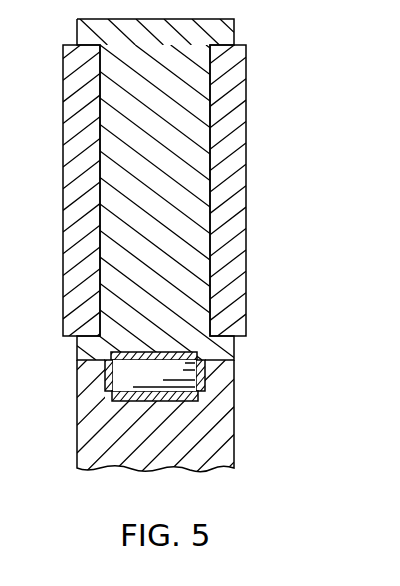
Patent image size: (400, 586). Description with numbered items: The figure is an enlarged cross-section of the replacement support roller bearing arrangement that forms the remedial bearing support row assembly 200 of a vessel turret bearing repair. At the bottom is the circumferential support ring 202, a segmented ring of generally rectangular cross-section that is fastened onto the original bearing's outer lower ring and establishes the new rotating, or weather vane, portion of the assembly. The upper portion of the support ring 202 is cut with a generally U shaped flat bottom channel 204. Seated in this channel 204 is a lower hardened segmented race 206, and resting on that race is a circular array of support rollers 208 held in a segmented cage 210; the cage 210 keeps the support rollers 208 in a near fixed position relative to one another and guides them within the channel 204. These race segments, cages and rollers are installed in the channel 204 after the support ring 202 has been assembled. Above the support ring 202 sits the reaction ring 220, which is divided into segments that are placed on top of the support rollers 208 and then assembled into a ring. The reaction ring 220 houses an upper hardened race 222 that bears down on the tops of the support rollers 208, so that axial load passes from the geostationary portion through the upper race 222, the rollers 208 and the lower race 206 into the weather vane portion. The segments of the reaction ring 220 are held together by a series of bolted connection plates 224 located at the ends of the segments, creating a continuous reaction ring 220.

The remedial bearing support row assembly 200 is at (158, 355).
The circumferential support ring 202 is at (215, 442).
The U shaped flat bottom channel 204 is at (185, 388).
The lower hardened segmented race 206 is at (115, 400).
The support rollers 208 is at (204, 366).
The segmented cage 210 is at (106, 376).
The reaction ring 220 is at (167, 202).
The upper hardened race 222 is at (150, 352).
The bolted connection plates 224 is at (243, 87).